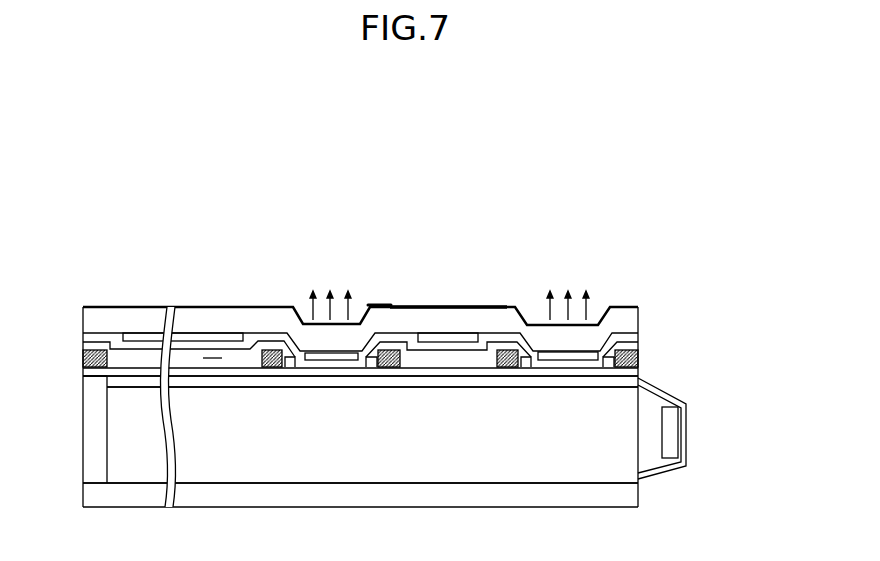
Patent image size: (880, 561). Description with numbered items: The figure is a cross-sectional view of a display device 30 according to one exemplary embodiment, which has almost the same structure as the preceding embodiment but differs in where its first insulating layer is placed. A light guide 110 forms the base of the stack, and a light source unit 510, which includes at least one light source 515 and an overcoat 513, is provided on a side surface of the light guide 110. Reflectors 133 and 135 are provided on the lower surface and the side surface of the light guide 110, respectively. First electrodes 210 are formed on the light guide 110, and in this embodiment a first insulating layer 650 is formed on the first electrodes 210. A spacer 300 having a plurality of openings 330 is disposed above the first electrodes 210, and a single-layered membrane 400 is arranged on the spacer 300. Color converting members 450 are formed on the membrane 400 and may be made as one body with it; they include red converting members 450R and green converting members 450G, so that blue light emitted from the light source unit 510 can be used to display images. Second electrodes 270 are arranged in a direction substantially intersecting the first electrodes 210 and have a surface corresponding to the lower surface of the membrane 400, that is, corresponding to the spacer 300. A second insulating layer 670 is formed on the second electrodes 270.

The display device 30 is at (300, 195).
The light guide 110 is at (568, 462).
The reflector 133 is at (393, 495).
The reflector 135 is at (92, 434).
The first electrode 210 is at (328, 382).
The second electrode 270 is at (225, 336).
The spacer 300 is at (92, 357).
The opening 330 is at (213, 358).
The membrane 400 is at (516, 306).
The color converting member 450 is at (429, 256).
The red converting member 450R is at (372, 304).
The green converting member 450G is at (440, 305).
The light source unit 510 is at (712, 427).
The overcoat 513 is at (662, 392).
The light source 515 is at (684, 468).
The first insulating layer 650 is at (95, 372).
The second insulating layer 670 is at (95, 338).